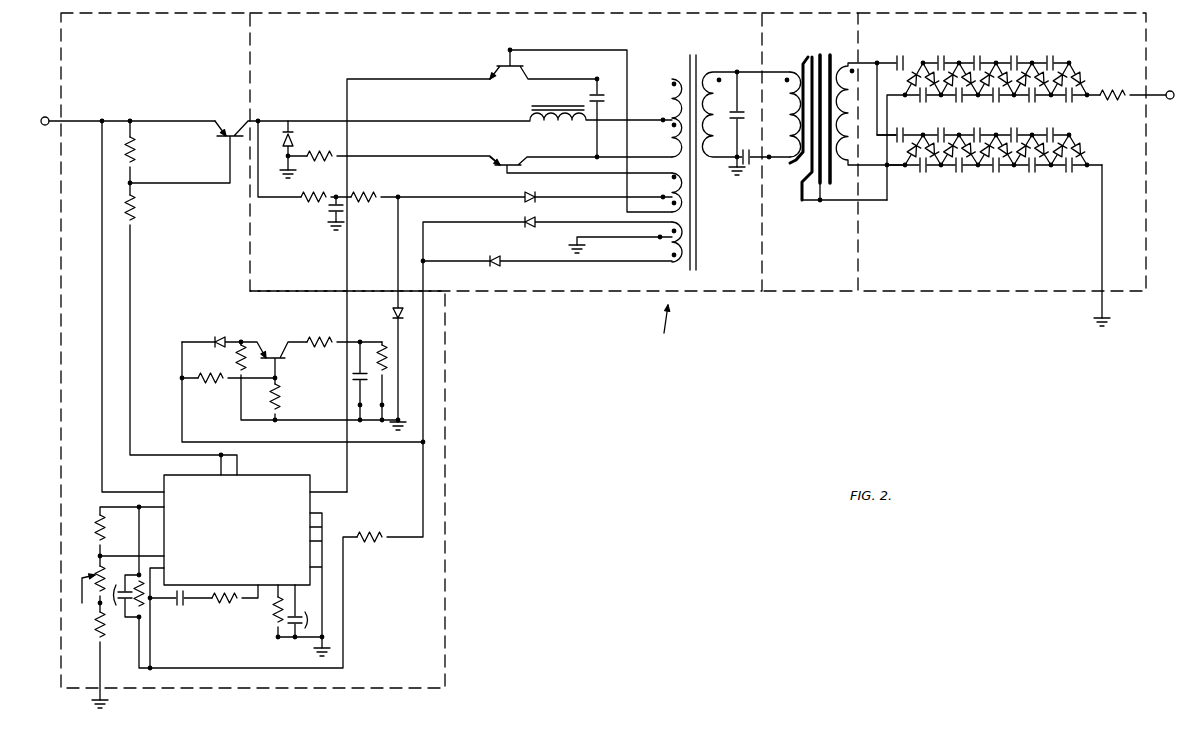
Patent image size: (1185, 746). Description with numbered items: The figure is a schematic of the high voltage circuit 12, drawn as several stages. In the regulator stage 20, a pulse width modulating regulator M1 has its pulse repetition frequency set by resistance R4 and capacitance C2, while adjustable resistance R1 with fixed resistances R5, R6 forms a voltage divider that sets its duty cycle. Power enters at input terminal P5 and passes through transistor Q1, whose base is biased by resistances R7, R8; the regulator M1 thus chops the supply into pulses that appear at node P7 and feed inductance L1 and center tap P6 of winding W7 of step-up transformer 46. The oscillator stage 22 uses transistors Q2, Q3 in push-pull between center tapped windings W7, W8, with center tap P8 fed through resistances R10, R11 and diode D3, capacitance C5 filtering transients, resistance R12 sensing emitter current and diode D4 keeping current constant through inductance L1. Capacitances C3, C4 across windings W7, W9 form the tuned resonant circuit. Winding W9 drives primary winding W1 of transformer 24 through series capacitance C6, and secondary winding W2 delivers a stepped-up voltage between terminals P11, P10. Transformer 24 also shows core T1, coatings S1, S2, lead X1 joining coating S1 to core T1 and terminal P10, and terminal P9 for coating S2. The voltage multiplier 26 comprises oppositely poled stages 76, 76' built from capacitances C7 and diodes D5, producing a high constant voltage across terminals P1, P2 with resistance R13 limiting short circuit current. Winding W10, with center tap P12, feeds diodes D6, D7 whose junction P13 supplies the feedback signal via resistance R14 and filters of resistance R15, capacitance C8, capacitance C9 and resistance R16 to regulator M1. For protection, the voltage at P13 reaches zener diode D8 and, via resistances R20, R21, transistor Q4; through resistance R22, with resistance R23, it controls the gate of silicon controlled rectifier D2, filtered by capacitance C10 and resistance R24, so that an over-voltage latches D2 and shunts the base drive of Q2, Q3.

The high voltage circuit 12 is at (668, 360).
The regulator stage 20 is at (199, 296).
The constant current sinewave oscillator 22 is at (458, 66).
The transformer 24 is at (816, 247).
The voltage multiplier 26 is at (986, 251).
The step-up transformer 46 is at (697, 66).
The voltage multiplier stage 76 is at (996, 70).
The voltage multiplier stage 76' is at (989, 167).
The input terminal P5 is at (42, 121).
The node P7 is at (258, 117).
The center tap P6 is at (662, 120).
The center tap P8 is at (661, 198).
The terminal P9 is at (771, 160).
The terminal P10 is at (890, 170).
The terminal P11 is at (877, 63).
The center tap P12 is at (658, 239).
The junction P13 is at (424, 261).
The terminal P1 is at (1170, 91).
The terminal P2 is at (1104, 307).
The resistance R8 is at (141, 153).
The resistance R7 is at (181, 329).
The transistor Q1 is at (234, 123).
The diode D4 is at (292, 125).
The resistance R12 is at (394, 151).
The resistance R10 is at (326, 188).
The capacitance C5 is at (330, 212).
The resistance R11 is at (375, 188).
The silicon controlled rectifier D2 is at (392, 313).
The transistor Q2 is at (581, 130).
The capacitance C3 is at (593, 95).
The inductance L1 is at (596, 123).
The transistor Q3 is at (581, 156).
The diode D3 is at (530, 189).
The diode D6 is at (524, 220).
The diode D7 is at (581, 268).
The primary winding W7 is at (671, 77).
The winding W8 is at (704, 207).
The winding W10 is at (668, 251).
The secondary winding W9 is at (746, 103).
The capacitance C4 is at (743, 122).
The capacitance C6 is at (741, 160).
The primary winding W1 is at (783, 114).
The coating S1 is at (812, 54).
The coating S2 is at (794, 66).
The core T1 is at (832, 56).
The secondary winding W2 is at (853, 142).
The lead X1 is at (834, 202).
The capacitance C7 is at (972, 56).
The diode D5 is at (912, 83).
The resistance R13 is at (1105, 98).
The zener diode D8 is at (211, 333).
The transistor Q4 is at (273, 355).
The resistance R22 is at (342, 333).
The resistance R23 is at (236, 360).
The resistance R20 is at (231, 384).
The resistance R21 is at (281, 397).
The capacitance C10 is at (352, 378).
The resistance R24 is at (388, 335).
The pulse width modulating regulator M1 is at (272, 475).
The resistance R14 is at (361, 529).
The resistance R6 is at (91, 536).
The adjustable resistance R1 is at (85, 575).
The resistance R5 is at (84, 655).
The resistance R15 is at (142, 618).
The capacitance C8 is at (122, 607).
The capacitance C9 is at (180, 607).
The resistance R16 is at (225, 605).
The resistance R4 is at (282, 612).
The capacitance C2 is at (294, 622).